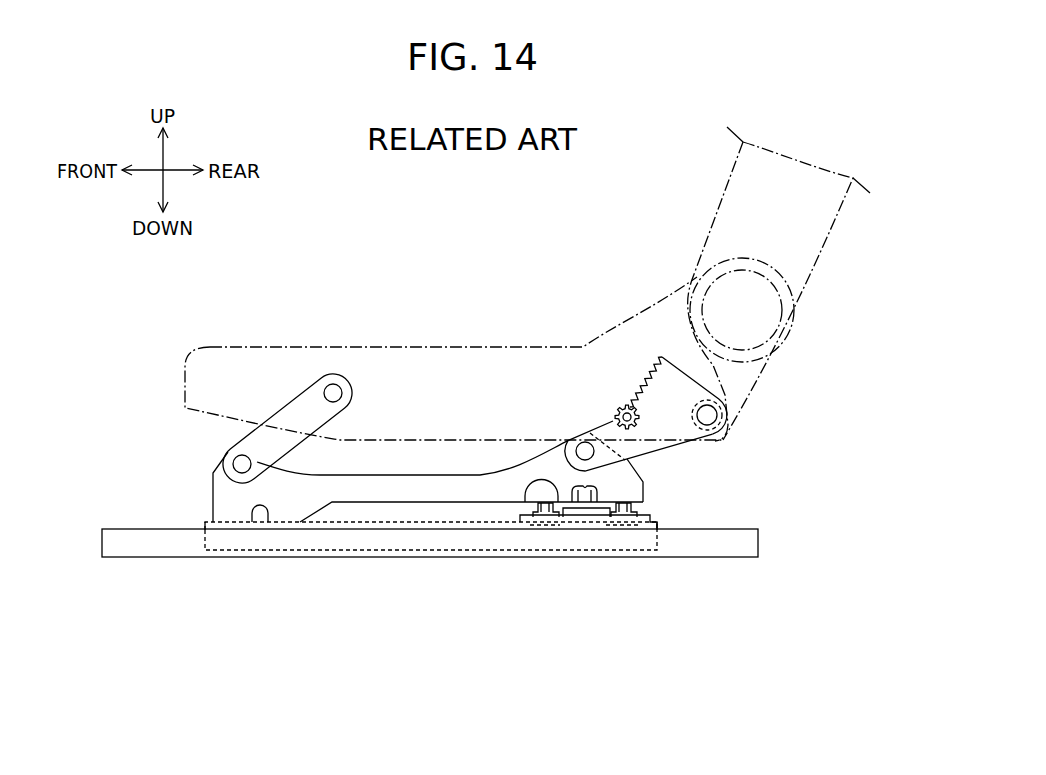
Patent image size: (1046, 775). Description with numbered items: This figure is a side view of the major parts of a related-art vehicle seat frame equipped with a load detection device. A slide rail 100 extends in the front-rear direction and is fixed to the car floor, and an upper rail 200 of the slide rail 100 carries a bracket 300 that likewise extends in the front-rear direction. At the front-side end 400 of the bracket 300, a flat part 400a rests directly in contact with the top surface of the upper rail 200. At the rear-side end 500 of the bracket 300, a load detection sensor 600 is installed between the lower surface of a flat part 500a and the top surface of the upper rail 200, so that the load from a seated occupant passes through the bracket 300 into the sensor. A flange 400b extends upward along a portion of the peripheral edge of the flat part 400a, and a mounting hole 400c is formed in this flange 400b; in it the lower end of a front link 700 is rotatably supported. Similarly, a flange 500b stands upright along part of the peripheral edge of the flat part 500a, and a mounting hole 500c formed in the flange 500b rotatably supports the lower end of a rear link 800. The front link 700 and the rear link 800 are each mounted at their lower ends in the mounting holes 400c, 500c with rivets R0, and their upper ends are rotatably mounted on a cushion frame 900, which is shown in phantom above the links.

The slide rail 100 is at (119, 499).
The upper rail 200 is at (203, 521).
The bracket 300 is at (412, 515).
The front-side end 400 is at (232, 508).
The flat part 400a is at (268, 522).
The flange 400b is at (278, 475).
The mounting hole 400c is at (235, 455).
The rear-side end 500 is at (643, 483).
The flat part 500a is at (525, 502).
The flange 500b is at (622, 468).
The mounting hole 500c is at (577, 452).
The load detection sensor 600 is at (603, 534).
The front link 700 is at (303, 408).
The rear link 800 is at (727, 418).
The cushion frame 900 is at (441, 345).
The rivet R0 is at (242, 455).